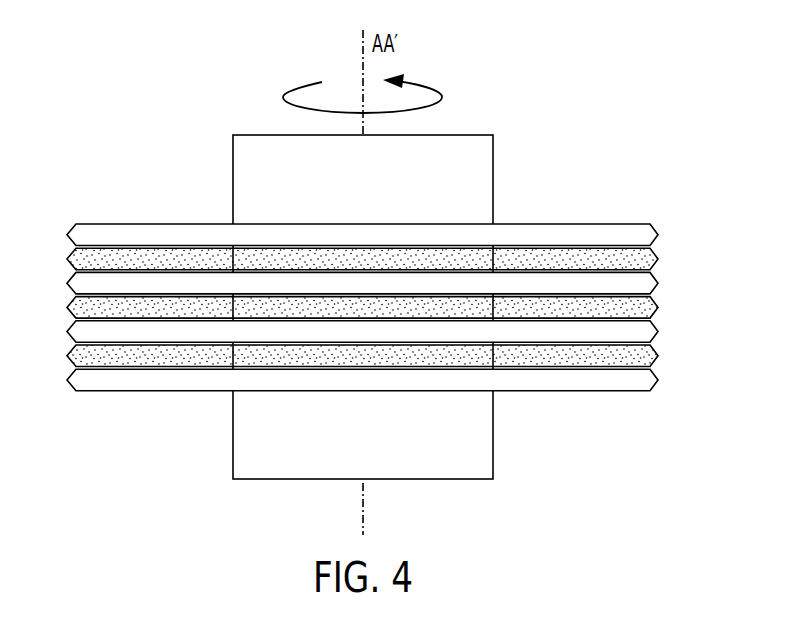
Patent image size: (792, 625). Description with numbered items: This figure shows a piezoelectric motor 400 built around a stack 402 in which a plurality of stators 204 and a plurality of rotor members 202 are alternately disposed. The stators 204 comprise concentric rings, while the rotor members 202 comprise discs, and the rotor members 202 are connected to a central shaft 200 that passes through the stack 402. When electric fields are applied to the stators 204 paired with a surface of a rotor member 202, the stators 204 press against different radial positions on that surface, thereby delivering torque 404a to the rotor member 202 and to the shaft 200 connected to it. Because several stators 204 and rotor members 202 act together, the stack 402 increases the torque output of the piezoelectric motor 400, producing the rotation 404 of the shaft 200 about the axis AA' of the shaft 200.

The shaft 200 is at (472, 183).
The rotor member 202 is at (678, 309).
The stator 204 is at (678, 281).
The piezoelectric motor 400 is at (668, 103).
The stack 402 is at (642, 438).
The rotation of the shaft 404 is at (442, 97).
The torque 404a is at (283, 97).